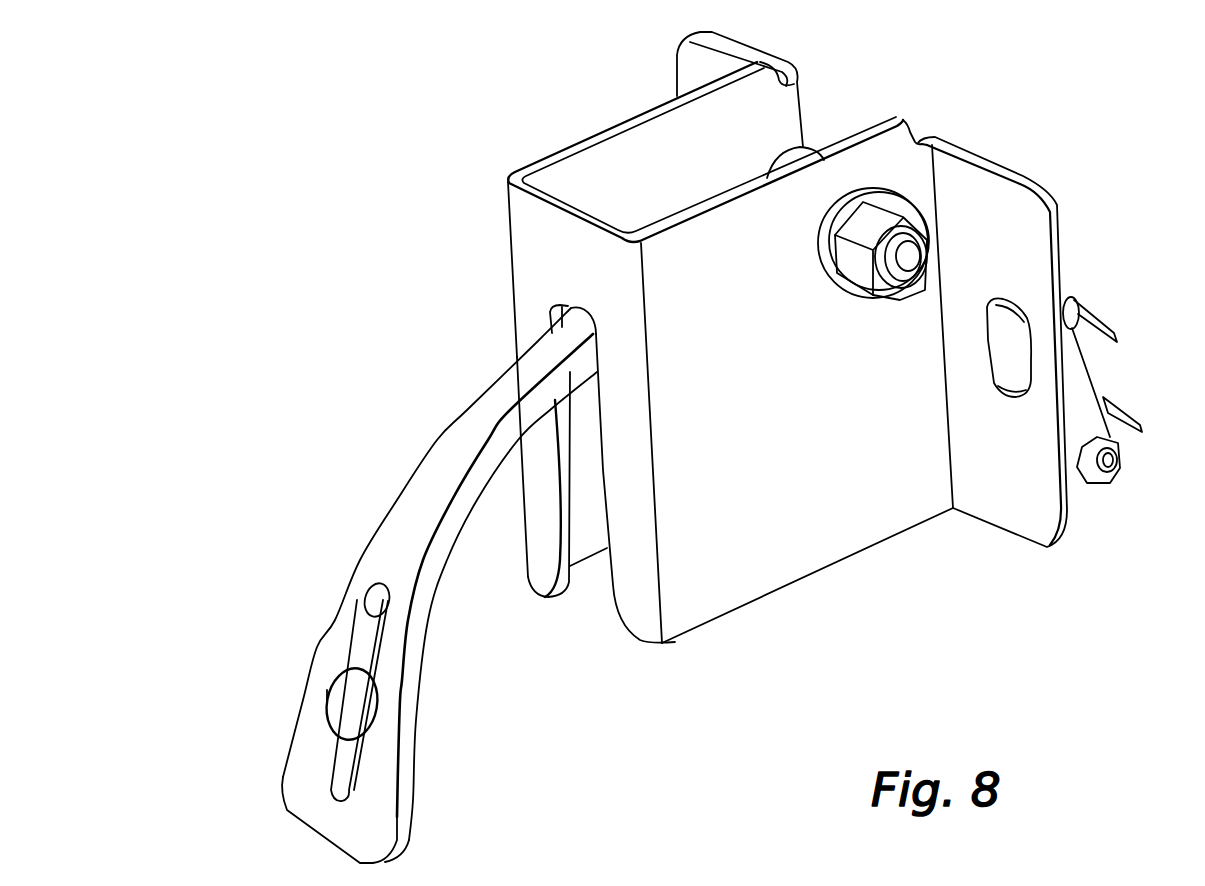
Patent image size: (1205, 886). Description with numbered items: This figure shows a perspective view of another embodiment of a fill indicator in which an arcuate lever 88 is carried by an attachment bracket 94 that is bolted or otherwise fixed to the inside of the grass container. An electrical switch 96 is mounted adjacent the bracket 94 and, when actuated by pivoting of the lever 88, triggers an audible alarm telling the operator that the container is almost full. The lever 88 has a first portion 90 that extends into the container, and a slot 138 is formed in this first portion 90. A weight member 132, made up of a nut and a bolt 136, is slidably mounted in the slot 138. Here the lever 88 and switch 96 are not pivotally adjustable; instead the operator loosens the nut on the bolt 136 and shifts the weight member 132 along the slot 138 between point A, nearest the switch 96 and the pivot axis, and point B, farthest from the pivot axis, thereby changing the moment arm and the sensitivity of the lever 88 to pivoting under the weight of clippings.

The attachment bracket 94 is at (597, 133).
The electrical switch 96 is at (1103, 367).
The lever 88 is at (433, 450).
The first portion 90 is at (417, 617).
The slot 138 is at (373, 627).
The bolt 136 is at (363, 710).
The weight member 132 is at (304, 685).